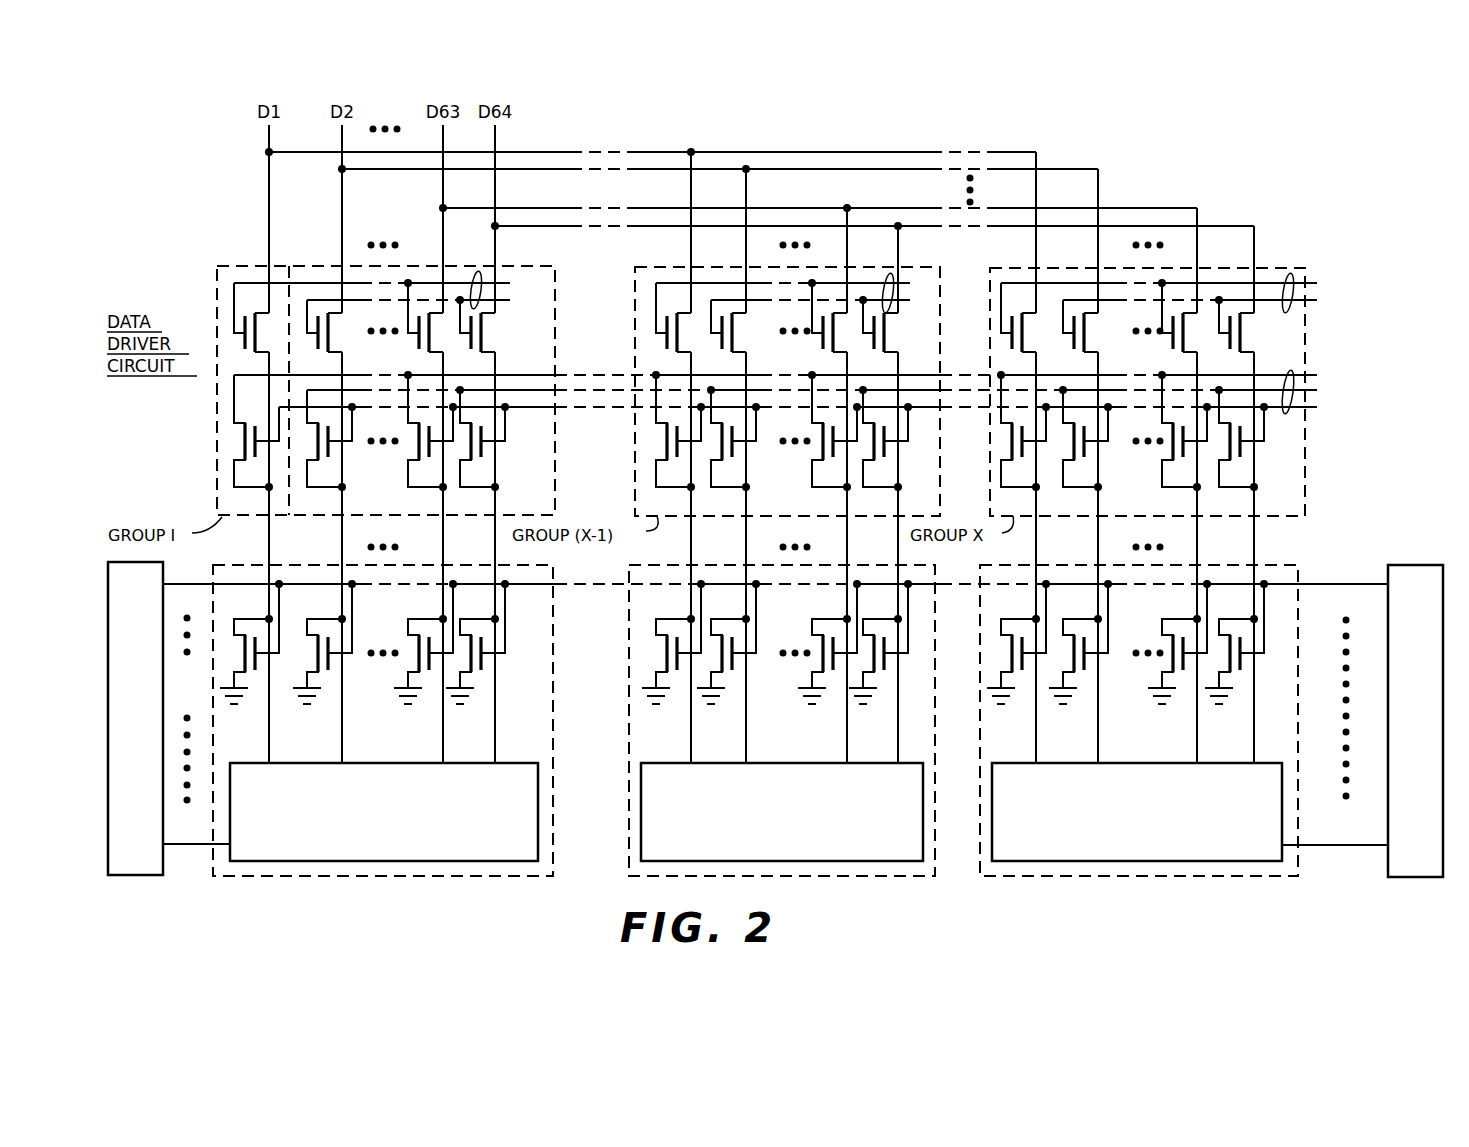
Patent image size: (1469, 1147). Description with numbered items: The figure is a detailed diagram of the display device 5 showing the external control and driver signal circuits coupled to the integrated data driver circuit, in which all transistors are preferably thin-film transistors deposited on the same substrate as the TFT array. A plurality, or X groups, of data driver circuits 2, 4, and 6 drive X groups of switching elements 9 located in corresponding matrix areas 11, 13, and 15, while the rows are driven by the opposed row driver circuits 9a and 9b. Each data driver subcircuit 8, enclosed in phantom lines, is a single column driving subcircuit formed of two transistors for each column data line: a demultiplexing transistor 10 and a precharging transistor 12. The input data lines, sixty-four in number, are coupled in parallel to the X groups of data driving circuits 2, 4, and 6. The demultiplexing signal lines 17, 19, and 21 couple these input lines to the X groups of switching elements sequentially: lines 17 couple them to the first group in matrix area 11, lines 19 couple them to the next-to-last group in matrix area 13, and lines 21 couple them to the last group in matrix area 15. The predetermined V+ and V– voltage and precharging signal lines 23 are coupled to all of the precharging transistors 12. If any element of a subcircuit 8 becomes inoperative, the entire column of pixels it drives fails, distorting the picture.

The data driver circuit 2 is at (331, 264).
The data driver circuit 4 is at (656, 265).
The display device 5 is at (796, 124).
The data driver circuit 6 is at (1014, 266).
The data driver subcircuit 8 is at (220, 371).
The switching elements 9 is at (230, 653).
The row driver circuit 9a is at (140, 876).
The row driver circuit 9b is at (1429, 563).
The demultiplexing transistor 10 is at (234, 355).
The matrix area 11 is at (386, 720).
The precharging transistor 12 is at (232, 441).
The matrix area 13 is at (628, 800).
The matrix area 15 is at (1152, 878).
The demultiplexing signal lines 17 is at (476, 272).
The demultiplexing signal lines 19 is at (888, 273).
The demultiplexing signal lines 21 is at (1290, 274).
The V+, V– and precharging signal lines 23 is at (1290, 370).